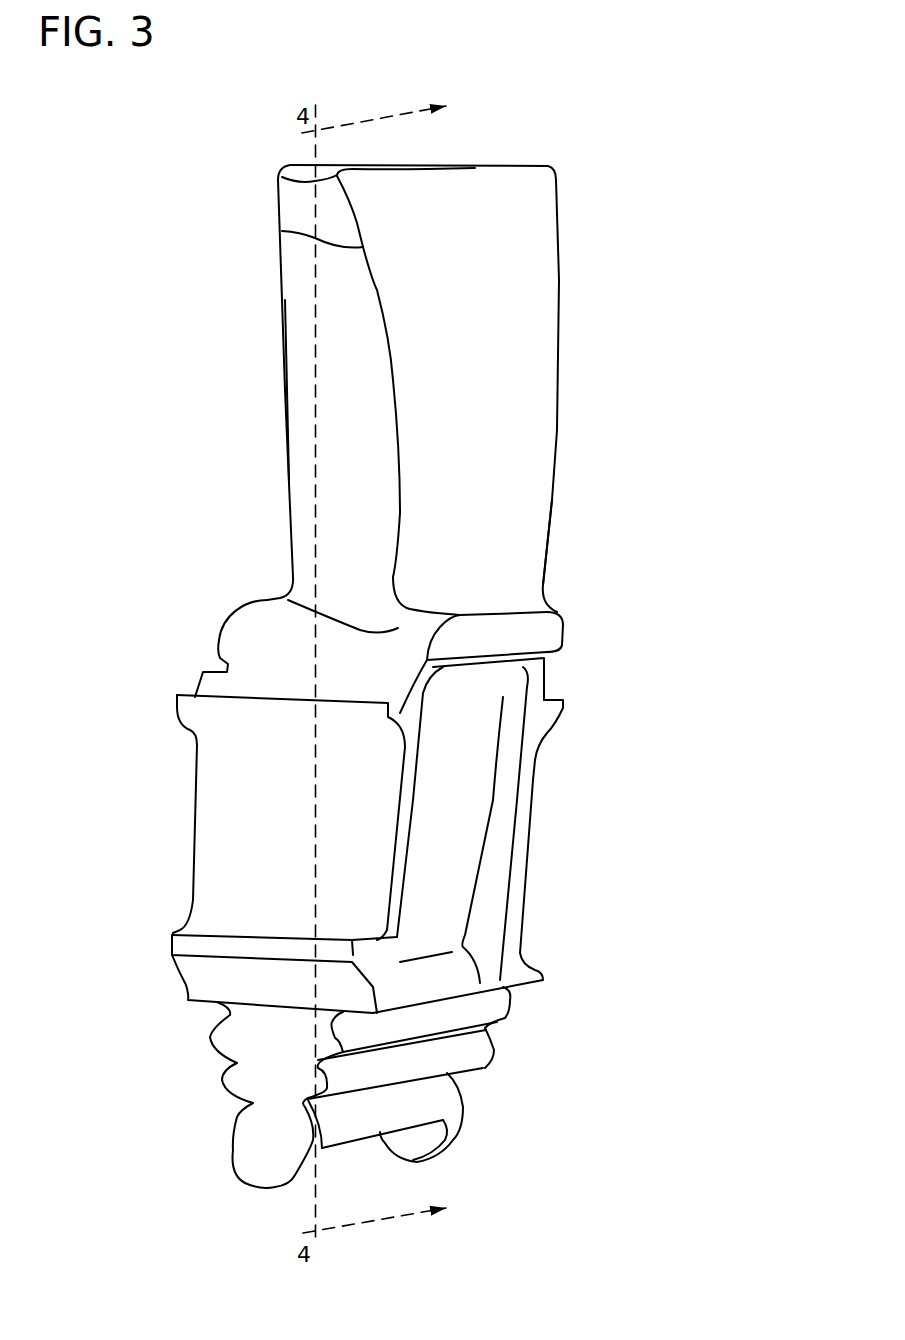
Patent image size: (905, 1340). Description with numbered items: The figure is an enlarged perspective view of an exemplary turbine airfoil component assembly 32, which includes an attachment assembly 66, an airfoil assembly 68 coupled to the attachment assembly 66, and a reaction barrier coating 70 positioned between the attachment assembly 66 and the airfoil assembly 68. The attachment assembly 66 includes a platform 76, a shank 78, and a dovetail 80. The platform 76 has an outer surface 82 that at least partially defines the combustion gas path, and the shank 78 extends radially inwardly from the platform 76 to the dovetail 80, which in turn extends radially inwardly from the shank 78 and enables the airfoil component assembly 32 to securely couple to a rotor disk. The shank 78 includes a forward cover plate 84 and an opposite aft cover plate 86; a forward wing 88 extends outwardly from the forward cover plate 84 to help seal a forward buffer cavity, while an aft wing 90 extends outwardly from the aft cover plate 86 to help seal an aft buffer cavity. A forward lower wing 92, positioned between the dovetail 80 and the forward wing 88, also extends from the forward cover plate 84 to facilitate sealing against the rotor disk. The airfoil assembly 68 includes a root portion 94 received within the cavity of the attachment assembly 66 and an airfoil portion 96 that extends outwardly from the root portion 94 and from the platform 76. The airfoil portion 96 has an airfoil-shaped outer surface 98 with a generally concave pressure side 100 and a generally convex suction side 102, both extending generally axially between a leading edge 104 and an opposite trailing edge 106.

The airfoil component assembly 32 is at (672, 170).
The attachment assembly 66 is at (628, 760).
The airfoil assembly 68 is at (667, 352).
The reaction barrier coating 70 is at (627, 600).
The platform 76 is at (550, 632).
The shank 78 is at (547, 837).
The dovetail 80 is at (545, 1032).
The outer surface 82 is at (267, 607).
The forward cover plate 84 is at (230, 827).
The aft cover plate 86 is at (523, 906).
The forward wing 88 is at (190, 693).
The aft wing 90 is at (562, 698).
The forward lower wing 92 is at (172, 938).
The root portion 94 is at (556, 583).
The airfoil portion 96 is at (572, 283).
The outer surface 98 is at (303, 405).
The pressure side 100 is at (440, 207).
The suction side 102 is at (297, 293).
The leading edge 104 is at (282, 231).
The trailing edge 106 is at (558, 403).